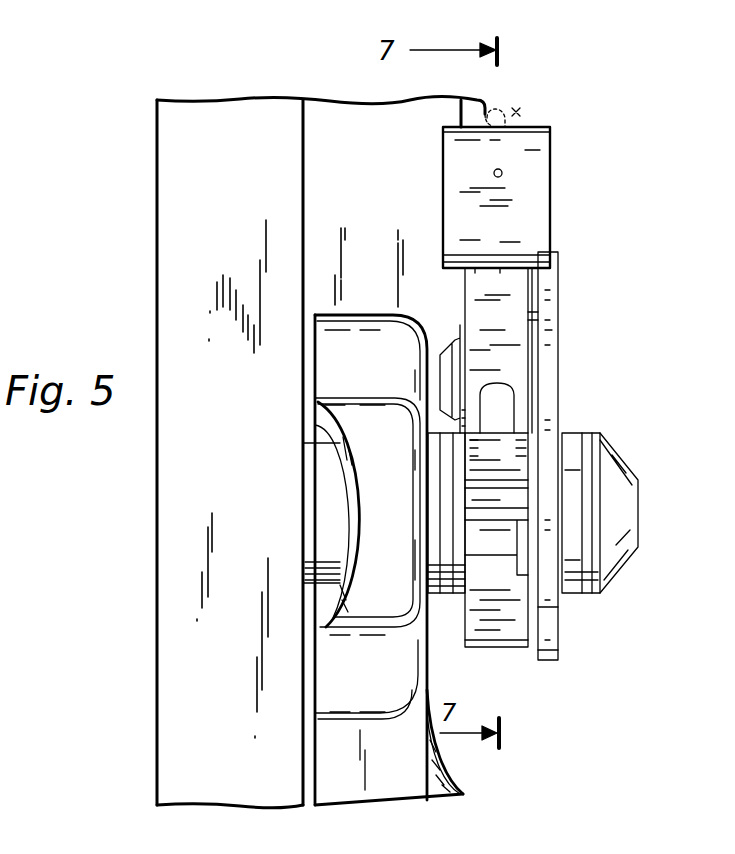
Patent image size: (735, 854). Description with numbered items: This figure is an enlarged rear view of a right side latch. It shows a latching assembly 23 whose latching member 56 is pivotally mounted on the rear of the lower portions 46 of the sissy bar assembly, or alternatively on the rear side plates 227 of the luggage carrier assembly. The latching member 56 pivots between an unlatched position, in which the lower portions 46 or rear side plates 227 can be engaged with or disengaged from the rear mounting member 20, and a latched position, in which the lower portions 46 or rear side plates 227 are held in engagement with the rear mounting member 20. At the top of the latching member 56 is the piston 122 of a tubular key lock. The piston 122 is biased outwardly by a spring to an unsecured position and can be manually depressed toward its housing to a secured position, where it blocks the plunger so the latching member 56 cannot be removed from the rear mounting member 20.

The rear mounting member 20 is at (647, 467).
The latching assembly 23 is at (417, 223).
The lower portions 46 is at (610, 456).
The rear side plates 227 is at (542, 366).
The latching member 56 is at (523, 217).
The piston 122 is at (520, 112).